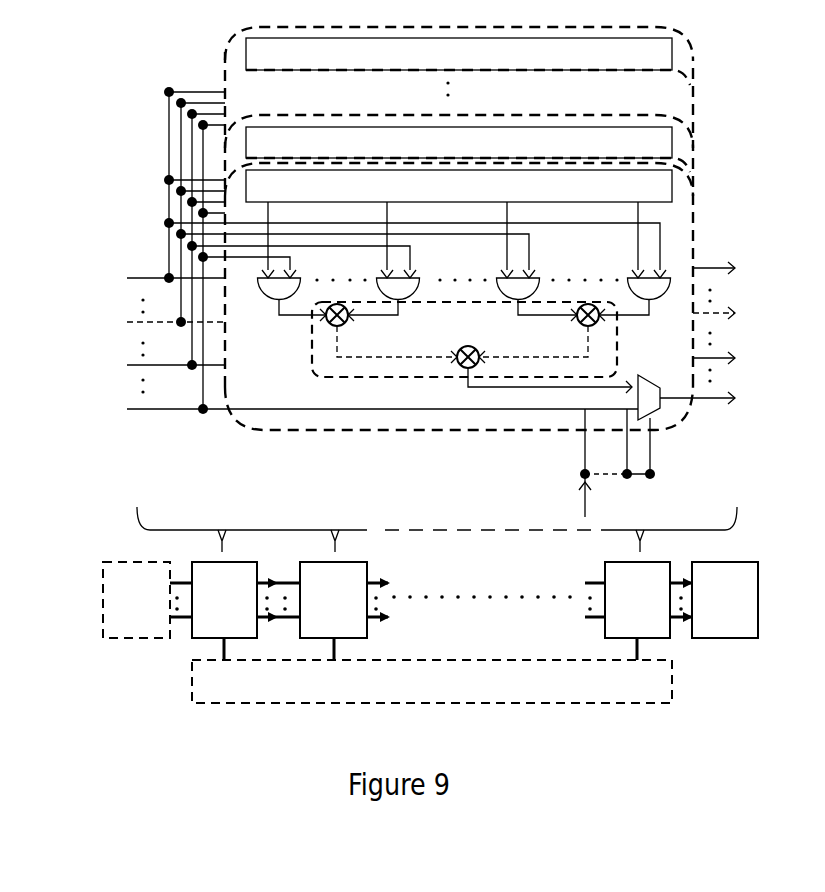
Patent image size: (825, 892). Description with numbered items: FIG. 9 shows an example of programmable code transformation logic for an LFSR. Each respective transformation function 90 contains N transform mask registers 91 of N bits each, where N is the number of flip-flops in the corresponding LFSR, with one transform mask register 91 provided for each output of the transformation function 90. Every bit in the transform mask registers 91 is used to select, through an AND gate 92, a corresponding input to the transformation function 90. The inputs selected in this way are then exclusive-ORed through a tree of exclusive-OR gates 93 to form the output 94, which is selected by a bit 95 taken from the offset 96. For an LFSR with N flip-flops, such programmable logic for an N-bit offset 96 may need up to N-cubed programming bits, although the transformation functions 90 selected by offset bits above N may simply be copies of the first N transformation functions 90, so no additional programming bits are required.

The transformation function 90 is at (192, 632).
The transform mask registers 91 is at (247, 52).
The AND gate 92 is at (672, 275).
The tree of exclusive-OR gates 93 is at (317, 366).
The output 94 is at (714, 405).
The bit 95 is at (577, 507).
The offset 96 is at (672, 690).